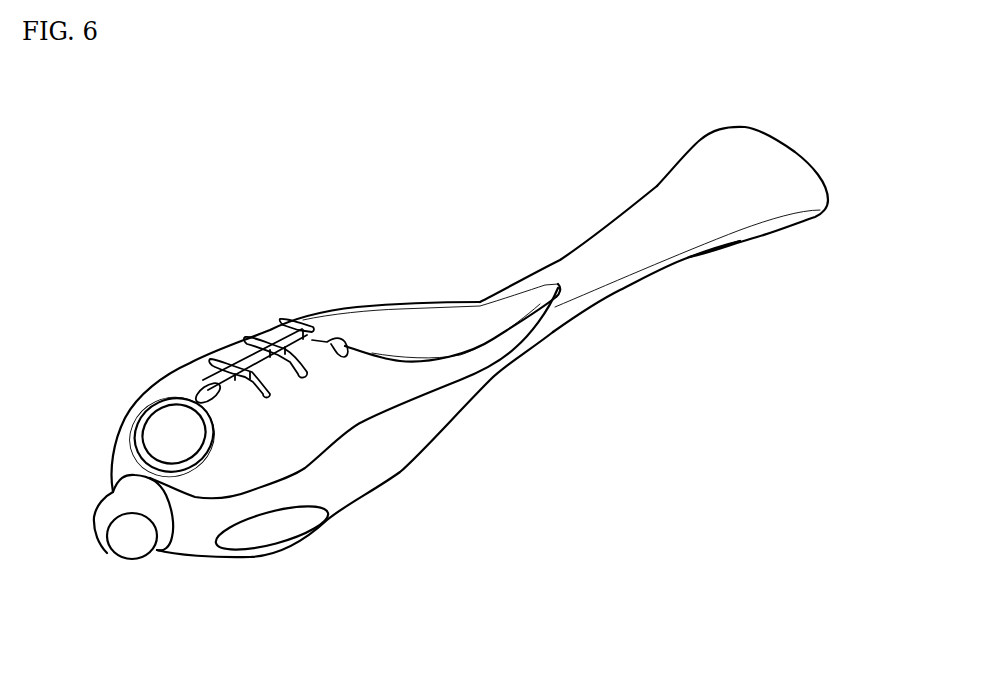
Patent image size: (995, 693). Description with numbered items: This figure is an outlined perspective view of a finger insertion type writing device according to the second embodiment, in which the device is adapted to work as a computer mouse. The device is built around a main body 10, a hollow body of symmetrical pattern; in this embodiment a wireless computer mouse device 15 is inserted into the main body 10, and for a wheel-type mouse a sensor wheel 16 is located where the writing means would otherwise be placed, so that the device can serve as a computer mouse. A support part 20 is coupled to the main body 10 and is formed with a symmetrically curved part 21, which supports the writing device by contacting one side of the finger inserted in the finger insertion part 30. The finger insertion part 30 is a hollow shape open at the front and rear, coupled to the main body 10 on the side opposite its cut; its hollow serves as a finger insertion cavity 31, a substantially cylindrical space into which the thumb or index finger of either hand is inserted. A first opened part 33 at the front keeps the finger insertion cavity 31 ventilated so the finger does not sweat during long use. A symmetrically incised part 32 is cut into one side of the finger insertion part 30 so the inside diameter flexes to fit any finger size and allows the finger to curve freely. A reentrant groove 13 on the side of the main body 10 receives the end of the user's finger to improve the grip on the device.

The main body 10 is at (412, 442).
The reentrant groove 13 is at (274, 525).
The wireless computer mouse device 15 is at (125, 500).
The sensor wheel 16 is at (137, 543).
The support part 20 is at (787, 202).
The symmetrically curved part 21 is at (613, 285).
The finger insertion part 30 is at (190, 377).
The finger insertion cavity 31 is at (416, 340).
The symmetrically incised part 32 is at (283, 338).
The first opened part 33 is at (170, 428).